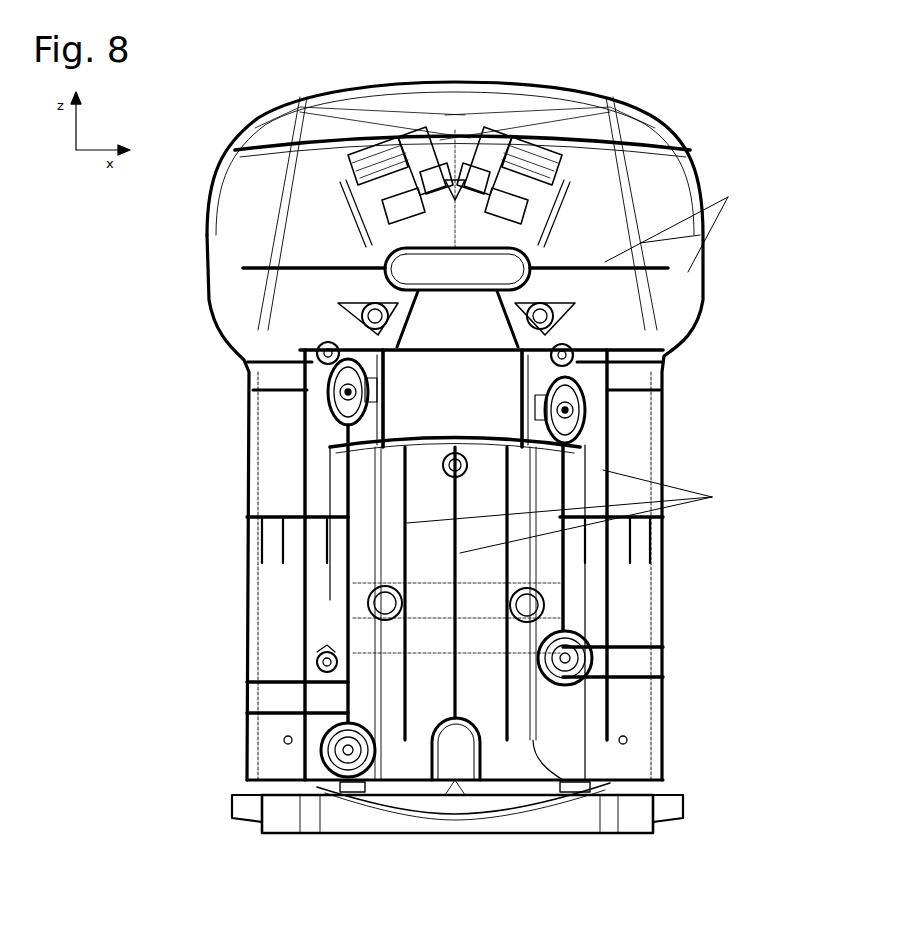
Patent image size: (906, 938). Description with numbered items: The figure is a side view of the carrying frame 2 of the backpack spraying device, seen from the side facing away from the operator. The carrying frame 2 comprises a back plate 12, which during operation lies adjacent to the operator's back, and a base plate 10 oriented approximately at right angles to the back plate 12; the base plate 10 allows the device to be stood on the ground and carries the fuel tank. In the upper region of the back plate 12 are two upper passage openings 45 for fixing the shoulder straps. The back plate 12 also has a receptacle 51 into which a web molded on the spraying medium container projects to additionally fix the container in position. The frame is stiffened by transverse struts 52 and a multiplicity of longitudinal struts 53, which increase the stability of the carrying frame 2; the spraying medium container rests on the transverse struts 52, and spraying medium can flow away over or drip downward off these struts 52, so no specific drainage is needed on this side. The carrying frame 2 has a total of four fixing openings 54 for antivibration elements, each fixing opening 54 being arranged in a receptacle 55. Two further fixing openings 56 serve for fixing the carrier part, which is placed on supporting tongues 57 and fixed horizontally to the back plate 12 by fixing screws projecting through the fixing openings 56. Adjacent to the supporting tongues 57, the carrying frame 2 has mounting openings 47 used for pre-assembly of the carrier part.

The carrying frame 2 is at (719, 91).
The base plate 10 is at (532, 820).
The back plate 12 is at (236, 233).
The upper passage openings 45 is at (512, 128).
The mounting openings 47 is at (317, 520).
The receptacle 51 is at (518, 250).
The transverse struts 52 is at (678, 230).
The longitudinal struts 53 is at (544, 561).
The fixing openings 54 is at (323, 398).
The receptacle 55 is at (313, 380).
The fixing openings 56 is at (372, 320).
The supporting tongues 57 is at (250, 503).